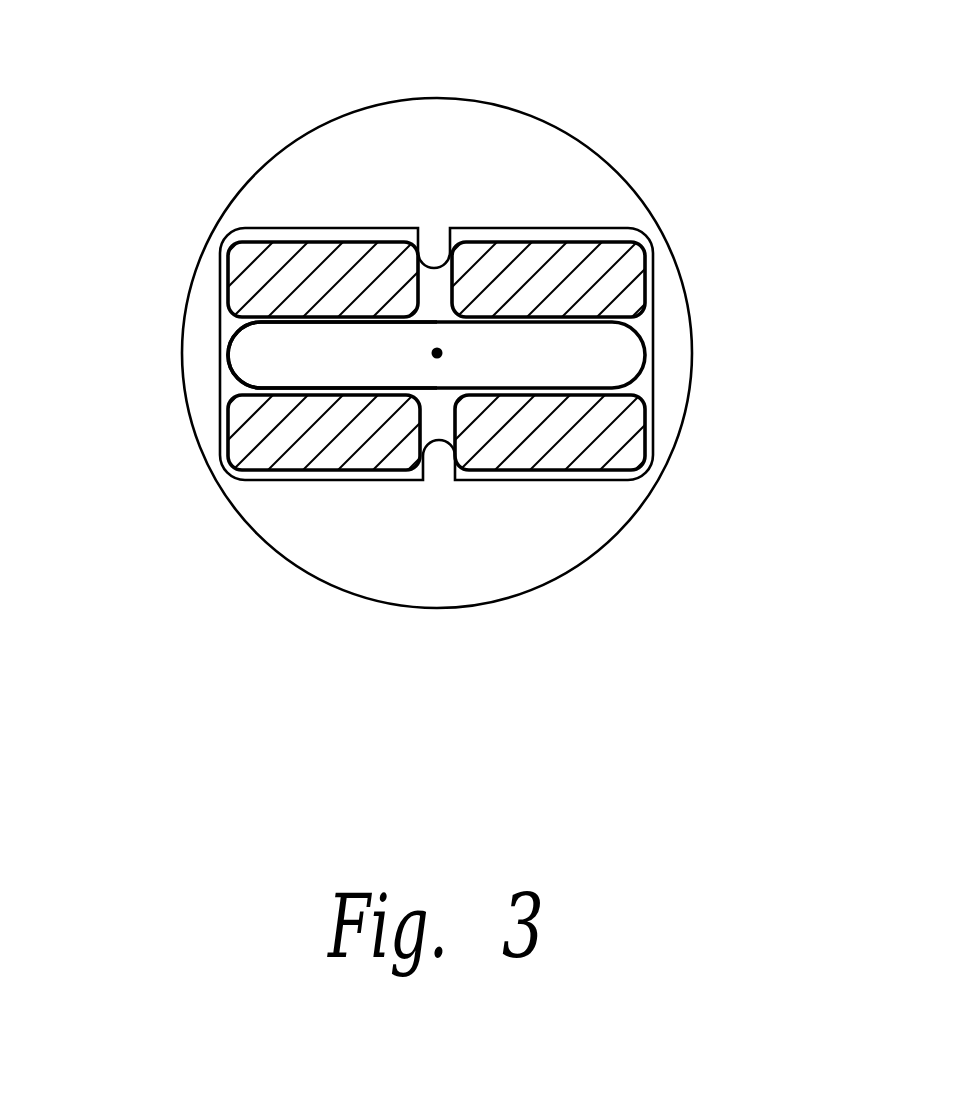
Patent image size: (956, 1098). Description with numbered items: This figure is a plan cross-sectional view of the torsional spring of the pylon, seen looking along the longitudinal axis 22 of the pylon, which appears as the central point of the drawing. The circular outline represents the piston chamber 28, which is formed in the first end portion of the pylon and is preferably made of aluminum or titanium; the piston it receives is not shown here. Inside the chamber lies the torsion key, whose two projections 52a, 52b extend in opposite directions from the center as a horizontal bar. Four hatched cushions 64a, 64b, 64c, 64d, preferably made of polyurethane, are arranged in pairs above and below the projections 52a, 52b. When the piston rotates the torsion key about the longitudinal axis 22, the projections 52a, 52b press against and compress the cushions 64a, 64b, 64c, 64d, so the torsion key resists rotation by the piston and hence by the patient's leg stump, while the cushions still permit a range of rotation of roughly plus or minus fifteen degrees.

The piston chamber 28 is at (553, 143).
The longitudinal axis 22 is at (432, 352).
The projection 52a is at (625, 358).
The projection 52b is at (250, 343).
The cushion 64a is at (273, 250).
The cushion 64b is at (323, 440).
The cushion 64c is at (583, 450).
The cushion 64d is at (631, 250).